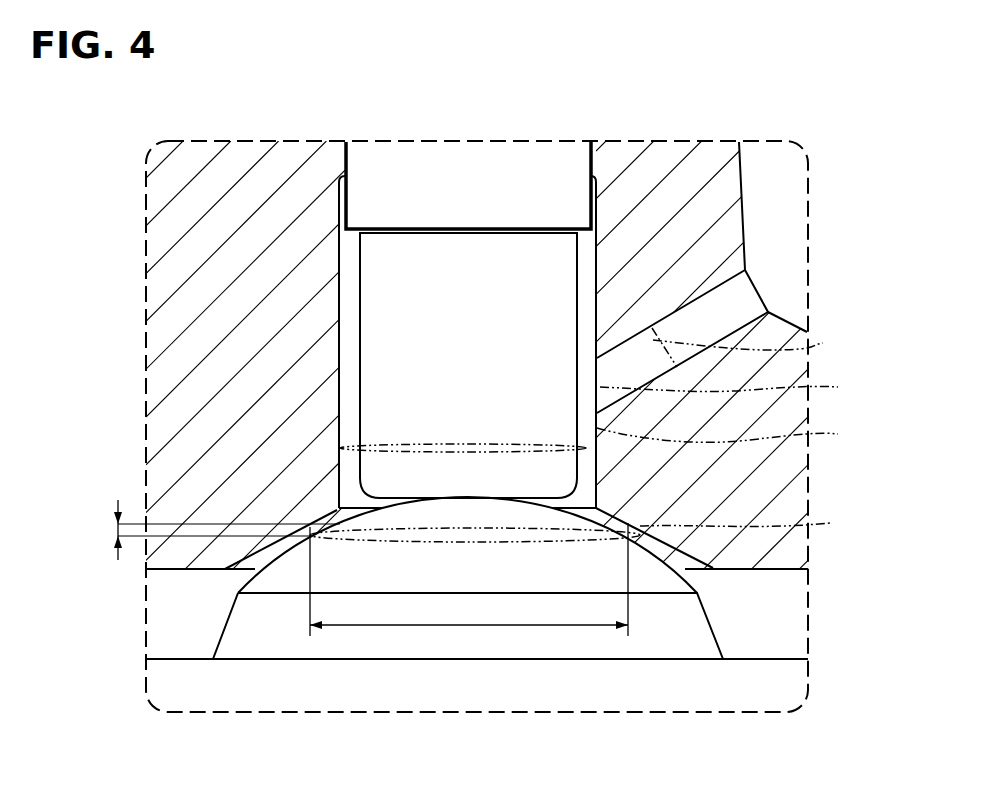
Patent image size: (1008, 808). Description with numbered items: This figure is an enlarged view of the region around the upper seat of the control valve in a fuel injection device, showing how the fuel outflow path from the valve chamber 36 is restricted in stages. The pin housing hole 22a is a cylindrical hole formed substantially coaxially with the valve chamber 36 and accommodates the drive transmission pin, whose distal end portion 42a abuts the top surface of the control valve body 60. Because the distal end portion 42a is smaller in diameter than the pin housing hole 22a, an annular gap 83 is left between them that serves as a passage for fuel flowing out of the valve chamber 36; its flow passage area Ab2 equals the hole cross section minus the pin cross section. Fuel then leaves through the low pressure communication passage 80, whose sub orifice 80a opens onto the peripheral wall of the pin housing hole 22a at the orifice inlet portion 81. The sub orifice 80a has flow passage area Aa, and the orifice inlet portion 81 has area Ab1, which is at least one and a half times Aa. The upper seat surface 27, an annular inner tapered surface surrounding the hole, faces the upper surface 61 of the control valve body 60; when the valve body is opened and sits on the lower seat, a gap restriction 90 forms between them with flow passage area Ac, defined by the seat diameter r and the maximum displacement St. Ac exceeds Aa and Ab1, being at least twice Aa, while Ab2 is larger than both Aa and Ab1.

The pin housing hole 22a is at (345, 335).
The orifice inlet portion 81 is at (596, 397).
The low pressure communication passage 80 is at (787, 297).
The sub orifice 80a is at (727, 303).
The annular gap 83 is at (590, 473).
The distal end portion 42a is at (360, 355).
The upper seat surface 27 is at (297, 533).
The valve chamber 36 is at (763, 600).
The control valve body 60 is at (190, 697).
The upper surface 61 is at (317, 530).
The gap restriction 90 is at (645, 538).
The maximum displacement St is at (117, 527).
The seat diameter r is at (469, 579).
The flow passage area of the sub orifice Aa is at (758, 345).
The flow passage area of the orifice inlet portion Ab1 is at (742, 384).
The flow passage area of the annular gap Ab2 is at (612, 436).
The flow passage area of the gap restriction Ac is at (586, 524).